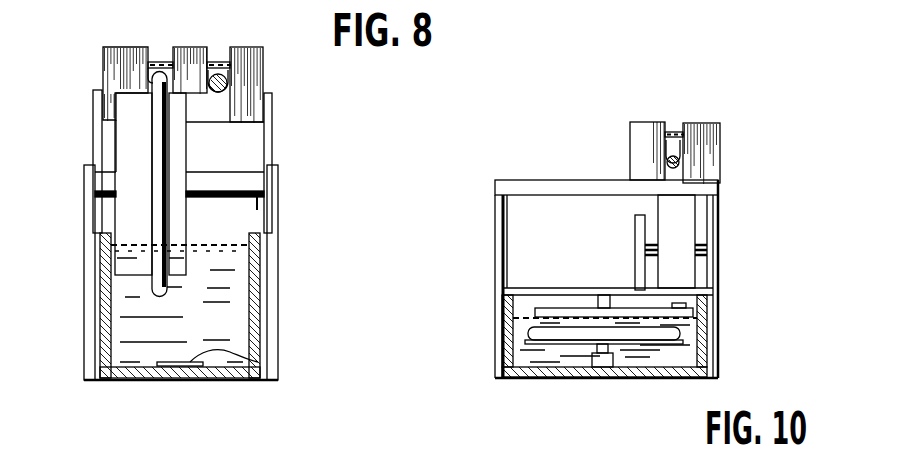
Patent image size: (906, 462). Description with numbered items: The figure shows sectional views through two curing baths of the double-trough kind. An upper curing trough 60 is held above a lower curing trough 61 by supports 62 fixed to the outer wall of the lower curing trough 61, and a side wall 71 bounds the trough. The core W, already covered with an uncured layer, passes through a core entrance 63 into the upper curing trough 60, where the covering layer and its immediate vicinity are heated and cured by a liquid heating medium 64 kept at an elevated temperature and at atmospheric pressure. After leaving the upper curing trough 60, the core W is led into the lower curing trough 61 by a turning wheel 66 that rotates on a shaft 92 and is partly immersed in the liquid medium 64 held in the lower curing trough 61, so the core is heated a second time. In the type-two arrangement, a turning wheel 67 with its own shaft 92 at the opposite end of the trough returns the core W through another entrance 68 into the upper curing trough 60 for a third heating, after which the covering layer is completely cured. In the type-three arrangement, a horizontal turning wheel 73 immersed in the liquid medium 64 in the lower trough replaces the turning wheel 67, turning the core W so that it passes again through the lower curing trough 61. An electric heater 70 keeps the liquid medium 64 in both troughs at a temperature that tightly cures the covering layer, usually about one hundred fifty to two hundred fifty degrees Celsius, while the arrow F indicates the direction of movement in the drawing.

In FIG. 8, the upper curing trough 60 is at (248, 87).
In FIG. 10, the upper curing trough 60 is at (705, 162).
In FIG. 8, the lower curing trough 61 is at (270, 333).
In FIG. 8, the supports 62 is at (93, 142).
In FIG. 10, the supports 62 is at (500, 227).
In FIG. 8, the core entrance 63 is at (227, 70).
In FIG. 10, the core entrance 63 is at (668, 165).
In FIG. 8, the liquid heating medium 64 is at (160, 62).
In FIG. 10, the liquid heating medium 64 is at (673, 133).
In FIG. 10, the turning wheel 66 is at (680, 222).
In FIG. 8, the turning wheel 67 is at (130, 180).
In FIG. 8, the entrance 68 is at (150, 70).
In FIG. 8, the electric heater 70 is at (250, 358).
In FIG. 8, the side wall 71 is at (192, 50).
In FIG. 10, the side wall 71 is at (698, 135).
In FIG. 10, the horizontal turning wheel 73 is at (563, 312).
In FIG. 8, the shaft 92 is at (257, 204).
In FIG. 10, the shaft 92 is at (647, 247).
In FIG. 8, the core W is at (224, 96).
In FIG. 10, the core W is at (665, 158).
In FIG. 8, the force direction F is at (293, 172).
In FIG. 10, the force direction F is at (750, 305).